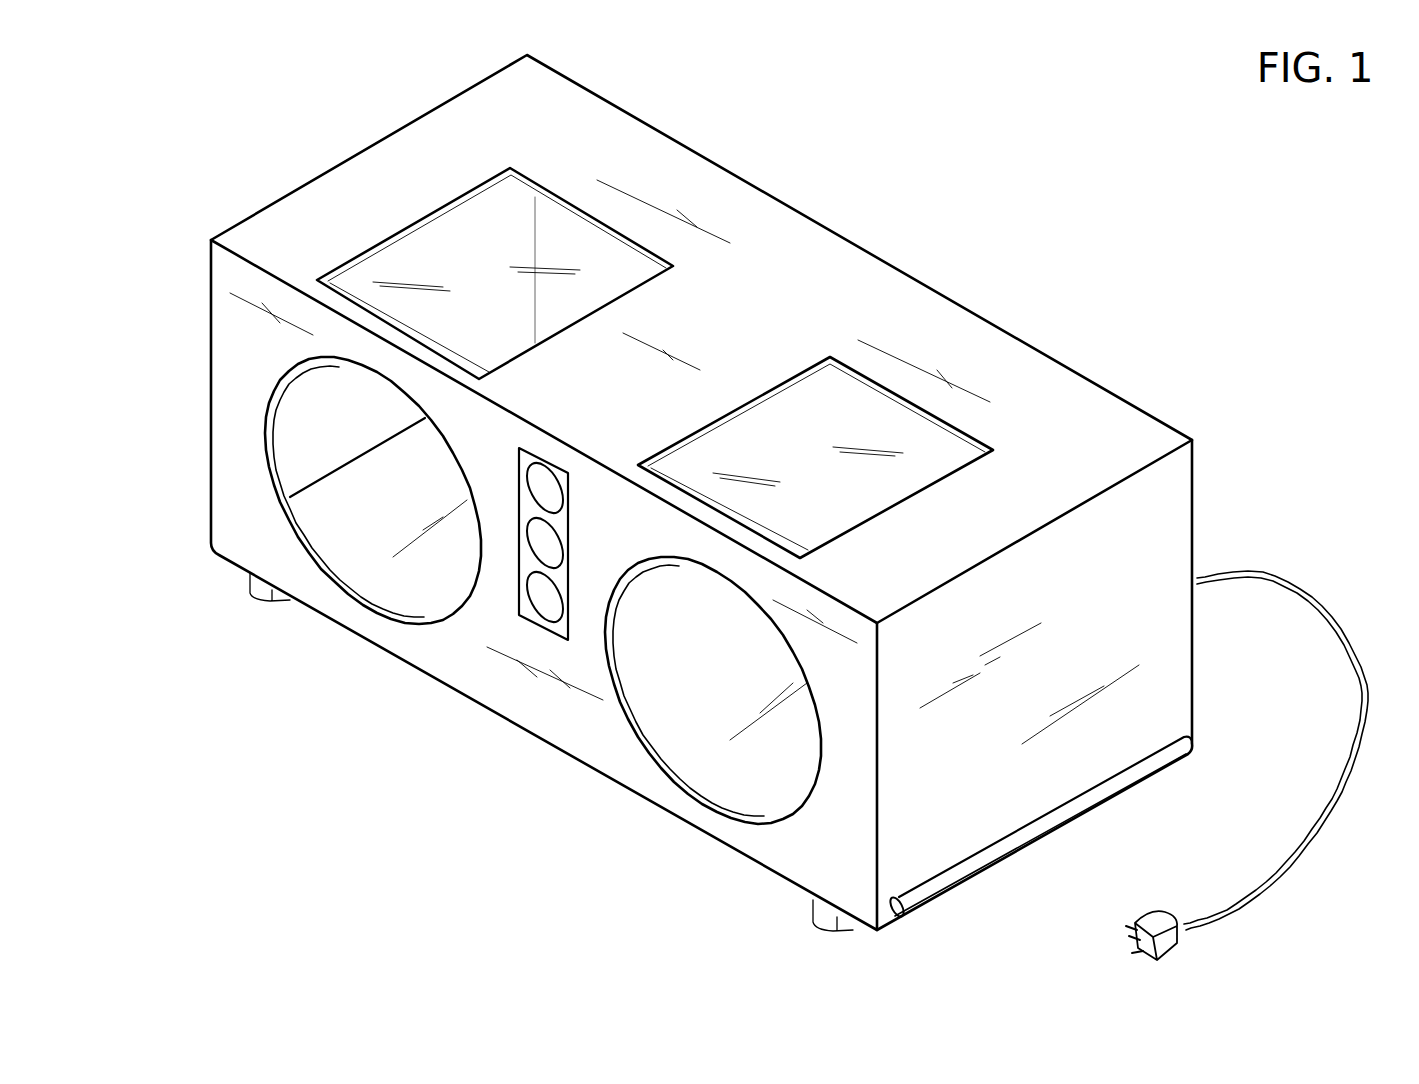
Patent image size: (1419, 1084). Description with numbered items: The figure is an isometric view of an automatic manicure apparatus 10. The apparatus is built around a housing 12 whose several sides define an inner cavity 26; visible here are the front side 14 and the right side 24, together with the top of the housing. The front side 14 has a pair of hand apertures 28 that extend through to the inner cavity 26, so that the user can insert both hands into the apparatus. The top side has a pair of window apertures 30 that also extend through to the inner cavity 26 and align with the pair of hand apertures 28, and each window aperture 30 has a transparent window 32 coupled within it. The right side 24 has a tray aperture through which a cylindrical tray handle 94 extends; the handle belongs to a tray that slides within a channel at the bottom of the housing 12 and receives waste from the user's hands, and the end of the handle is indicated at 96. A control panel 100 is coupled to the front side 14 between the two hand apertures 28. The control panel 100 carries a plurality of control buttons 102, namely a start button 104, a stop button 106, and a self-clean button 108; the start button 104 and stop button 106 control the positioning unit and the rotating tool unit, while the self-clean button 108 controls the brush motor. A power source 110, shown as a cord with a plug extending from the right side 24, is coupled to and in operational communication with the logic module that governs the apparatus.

The automatic manicure apparatus 10 is at (1115, 208).
The housing 12 is at (1112, 407).
The front side 14 is at (572, 732).
The right side 24 is at (1155, 550).
The inner cavity 26 is at (350, 527).
The hand apertures 28 is at (692, 712).
The window apertures 30 is at (782, 380).
The transparent window 32 is at (737, 445).
The tray handle 94 is at (996, 852).
The end cap of handle bar 96 is at (895, 915).
The control panel 100 is at (520, 498).
The control buttons 102 is at (568, 604).
The start button 104 is at (527, 462).
The stop button 106 is at (525, 618).
The self-clean button 108 is at (520, 533).
The power source 110 is at (1326, 805).